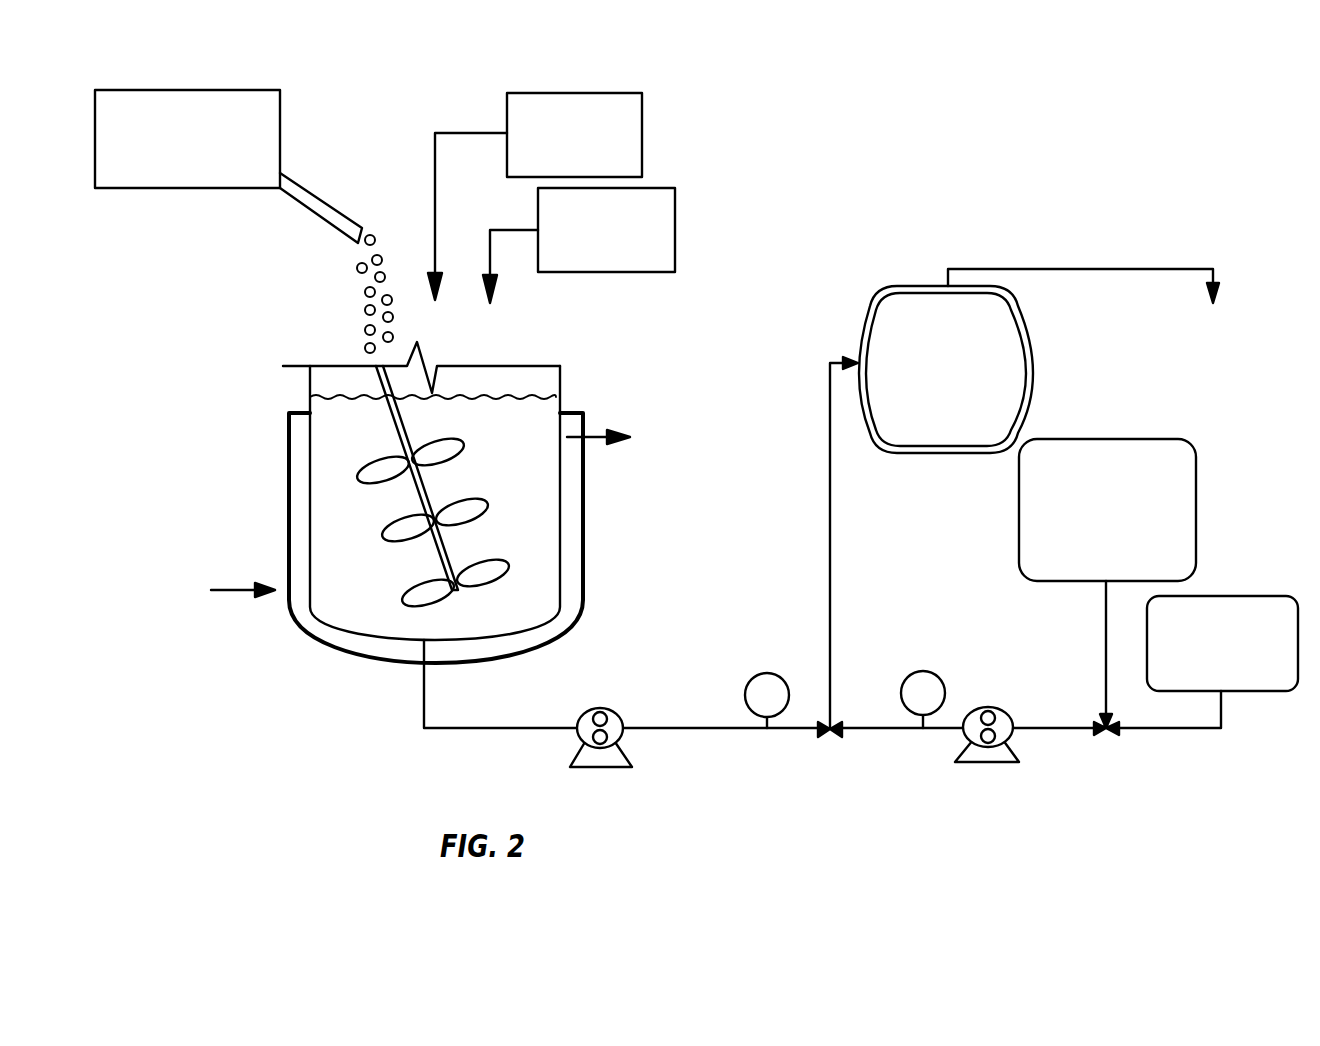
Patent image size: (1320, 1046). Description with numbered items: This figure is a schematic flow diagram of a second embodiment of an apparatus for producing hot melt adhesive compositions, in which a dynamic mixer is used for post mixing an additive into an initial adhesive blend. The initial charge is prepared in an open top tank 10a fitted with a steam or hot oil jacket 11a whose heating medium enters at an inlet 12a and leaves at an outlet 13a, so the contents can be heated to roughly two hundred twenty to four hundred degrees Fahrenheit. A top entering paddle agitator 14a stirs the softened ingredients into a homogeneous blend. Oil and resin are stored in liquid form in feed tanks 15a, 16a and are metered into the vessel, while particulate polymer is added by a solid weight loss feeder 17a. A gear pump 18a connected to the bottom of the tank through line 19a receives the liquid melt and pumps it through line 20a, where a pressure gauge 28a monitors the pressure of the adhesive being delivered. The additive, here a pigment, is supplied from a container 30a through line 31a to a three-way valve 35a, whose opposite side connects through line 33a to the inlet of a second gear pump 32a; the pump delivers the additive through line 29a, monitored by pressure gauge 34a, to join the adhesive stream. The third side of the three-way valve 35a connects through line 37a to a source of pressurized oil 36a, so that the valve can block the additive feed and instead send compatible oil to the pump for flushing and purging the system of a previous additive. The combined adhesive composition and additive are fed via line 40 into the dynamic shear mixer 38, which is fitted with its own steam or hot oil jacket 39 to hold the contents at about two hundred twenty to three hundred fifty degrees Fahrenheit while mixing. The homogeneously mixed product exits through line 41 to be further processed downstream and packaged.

The open top tank 10a is at (307, 380).
The hot oil jacket 11a is at (287, 484).
The inlet 12a is at (227, 590).
The outlet 13a is at (592, 432).
The paddle agitator 14a is at (382, 538).
The feed tank 15a is at (548, 93).
The feed tank 16a is at (675, 217).
The solid weight loss feeder 17a is at (168, 90).
The gear pump 18a is at (605, 768).
The line 19a is at (414, 704).
The line 20a is at (733, 732).
The pressure gauge 28a is at (757, 677).
The line 29a is at (882, 733).
The container 30a is at (1249, 596).
The line 31a is at (1205, 733).
The gear pump 32a is at (973, 764).
The line 33a is at (1043, 733).
The pressure gauge 34a is at (911, 672).
The three-way valve 35a is at (1107, 736).
The source of pressurized oil 36a is at (1019, 518).
The line 37a is at (1104, 627).
The dynamic shear mixer 38 is at (927, 286).
The hot oil jacket 39 is at (867, 325).
The line 40 is at (828, 517).
The line 41 is at (1083, 268).